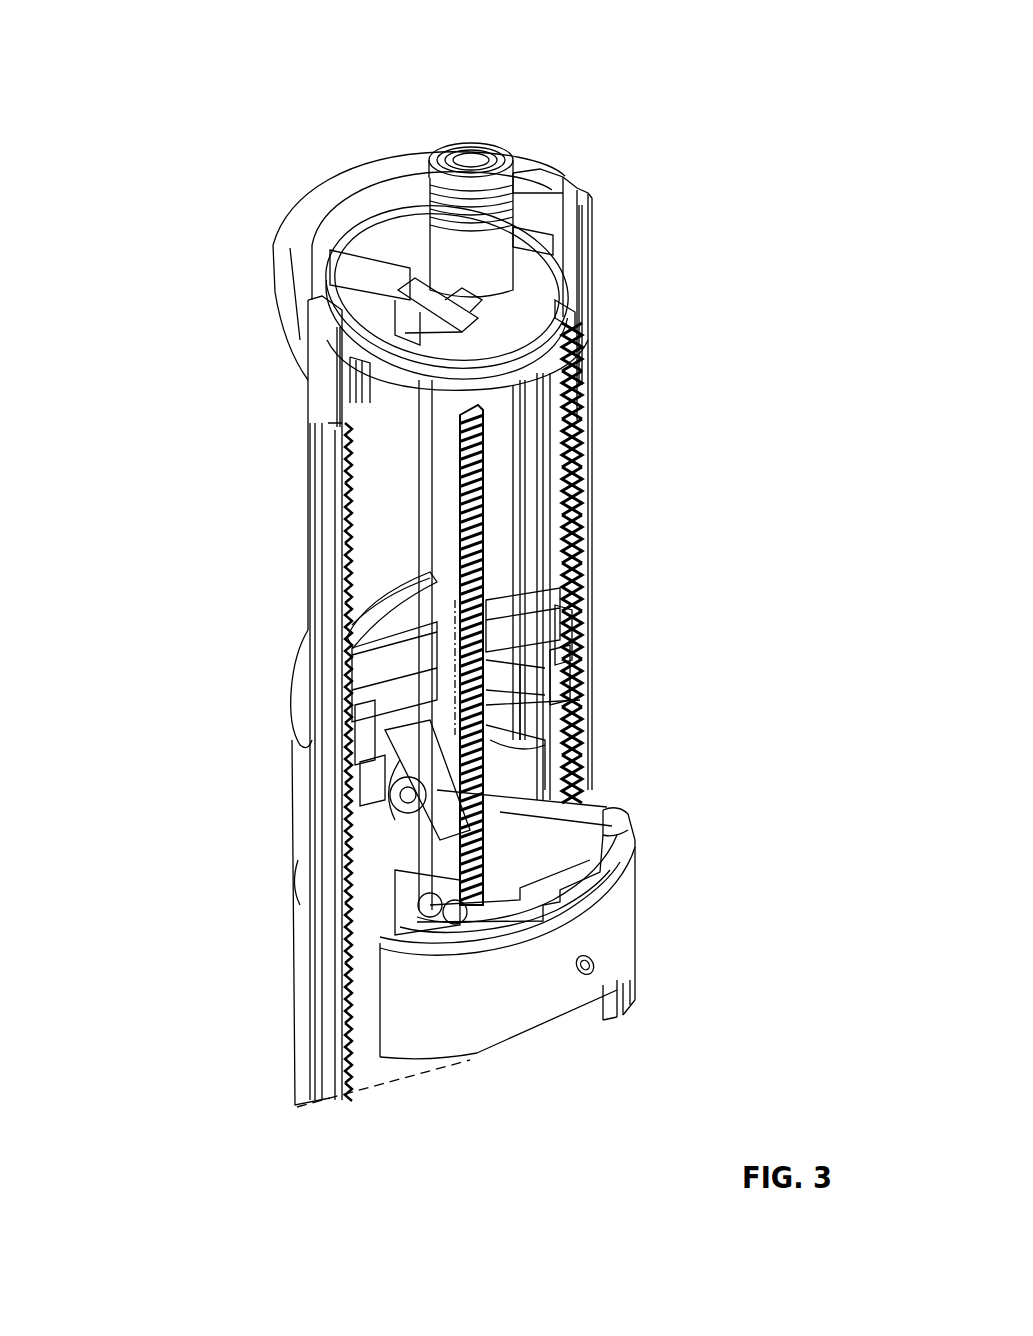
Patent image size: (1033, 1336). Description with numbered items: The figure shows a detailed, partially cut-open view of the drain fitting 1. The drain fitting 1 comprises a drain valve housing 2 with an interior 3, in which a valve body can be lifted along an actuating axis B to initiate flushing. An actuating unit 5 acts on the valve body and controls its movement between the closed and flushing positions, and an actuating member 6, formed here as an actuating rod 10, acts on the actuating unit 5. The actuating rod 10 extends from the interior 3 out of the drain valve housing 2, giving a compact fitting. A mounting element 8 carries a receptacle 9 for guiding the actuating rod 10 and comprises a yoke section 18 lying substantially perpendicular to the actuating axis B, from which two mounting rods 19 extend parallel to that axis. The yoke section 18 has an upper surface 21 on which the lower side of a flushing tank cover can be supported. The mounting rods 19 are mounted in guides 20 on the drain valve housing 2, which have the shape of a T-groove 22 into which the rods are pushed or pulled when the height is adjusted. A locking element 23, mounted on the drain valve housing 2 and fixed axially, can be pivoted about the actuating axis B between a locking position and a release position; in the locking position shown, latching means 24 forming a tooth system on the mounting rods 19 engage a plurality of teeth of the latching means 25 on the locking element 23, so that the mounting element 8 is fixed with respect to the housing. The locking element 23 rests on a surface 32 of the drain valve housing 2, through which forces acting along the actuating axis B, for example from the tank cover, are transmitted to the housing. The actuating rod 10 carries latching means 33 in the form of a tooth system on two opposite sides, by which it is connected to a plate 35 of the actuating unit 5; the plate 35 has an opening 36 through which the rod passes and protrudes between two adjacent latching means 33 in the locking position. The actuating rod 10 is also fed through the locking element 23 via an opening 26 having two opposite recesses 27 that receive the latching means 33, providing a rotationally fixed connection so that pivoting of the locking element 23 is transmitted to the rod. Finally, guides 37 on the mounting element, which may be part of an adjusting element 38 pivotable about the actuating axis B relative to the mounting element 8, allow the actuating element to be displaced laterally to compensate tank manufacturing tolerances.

The drain fitting 1 is at (633, 97).
The drain valve housing 2 is at (612, 940).
The interior 3 is at (617, 1017).
The actuating unit 5 is at (362, 830).
The actuating member 6 is at (279, 645).
The actuating rod 10 is at (455, 515).
The mounting element 8 is at (575, 203).
The receptacle 9 is at (575, 320).
The yoke section 18 is at (320, 205).
The mounting rods 19 is at (580, 493).
The guides 20 is at (383, 1048).
The upper surface 21 is at (345, 177).
The T-groove 22 is at (415, 930).
The locking element 23 is at (378, 667).
The latching means 24 is at (365, 712).
The latching means 25 is at (365, 765).
The opening 26 is at (375, 612).
The recesses 27 is at (432, 630).
The surface 32 is at (605, 832).
The latching means 33 is at (485, 460).
The plate 35 is at (545, 665).
The opening 36 is at (580, 705).
The guides 37 is at (402, 306).
The adjusting element 38 is at (372, 233).
The actuating axis B is at (540, 588).